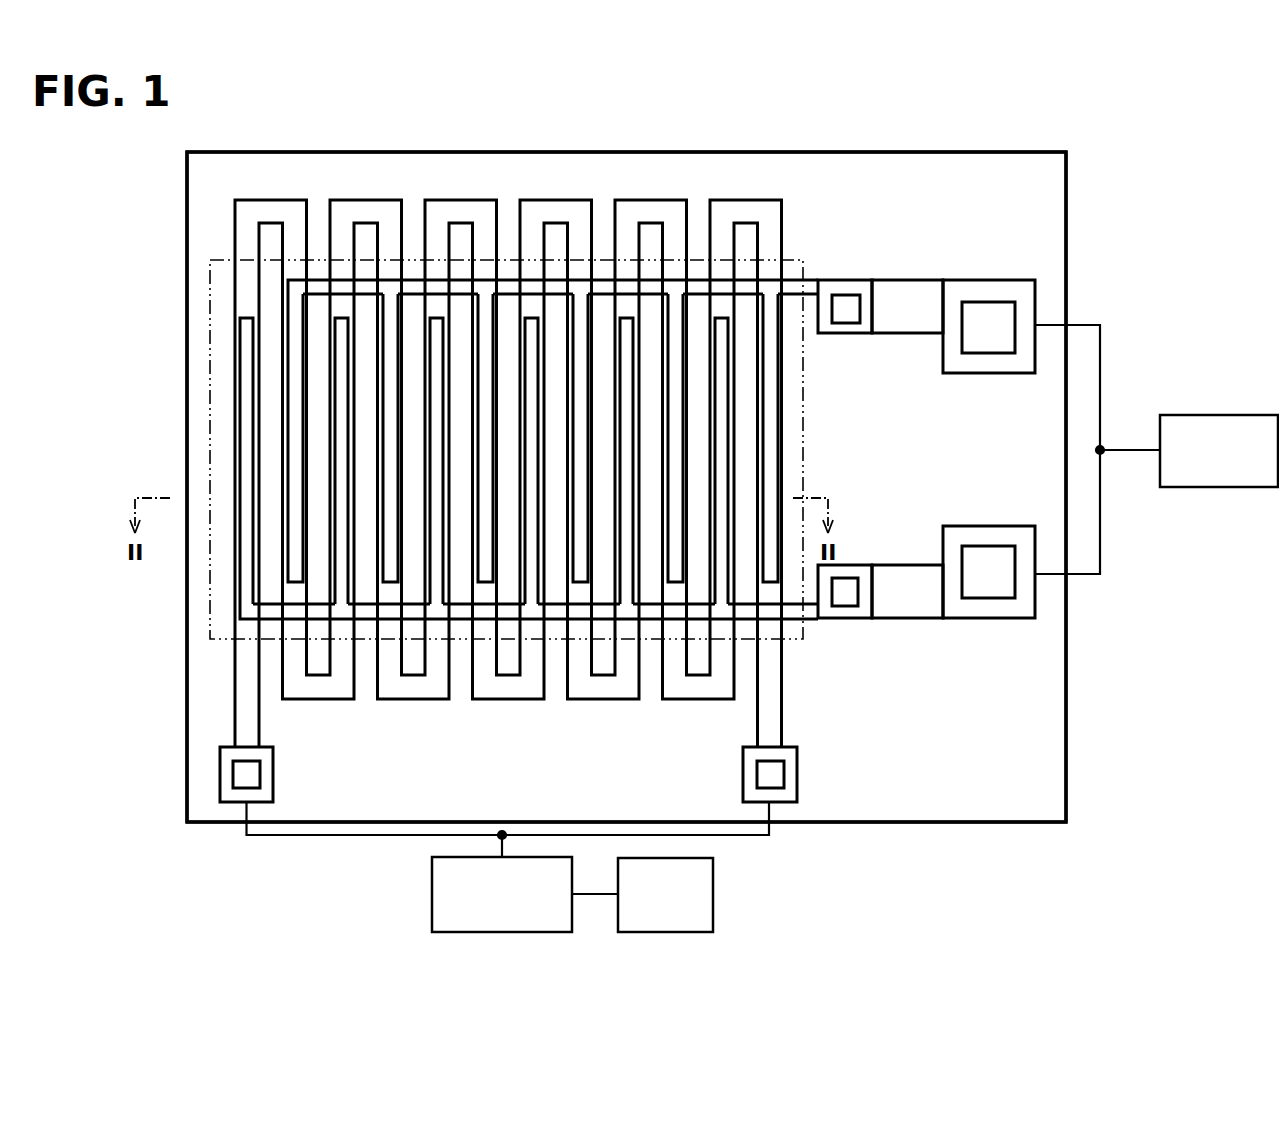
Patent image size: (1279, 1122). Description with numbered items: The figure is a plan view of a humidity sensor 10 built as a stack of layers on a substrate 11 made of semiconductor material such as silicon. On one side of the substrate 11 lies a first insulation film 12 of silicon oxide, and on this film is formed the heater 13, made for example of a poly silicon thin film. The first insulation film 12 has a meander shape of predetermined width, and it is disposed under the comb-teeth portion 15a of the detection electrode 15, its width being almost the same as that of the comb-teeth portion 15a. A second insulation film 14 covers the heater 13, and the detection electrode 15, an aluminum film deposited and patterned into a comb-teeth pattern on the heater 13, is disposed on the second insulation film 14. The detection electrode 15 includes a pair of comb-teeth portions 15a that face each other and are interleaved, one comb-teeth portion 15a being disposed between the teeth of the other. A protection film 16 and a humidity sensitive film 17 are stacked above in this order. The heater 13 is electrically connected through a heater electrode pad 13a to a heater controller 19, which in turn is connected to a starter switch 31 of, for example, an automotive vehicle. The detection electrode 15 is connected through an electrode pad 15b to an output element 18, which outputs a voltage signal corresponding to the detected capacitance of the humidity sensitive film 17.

The humidity sensor 10 is at (1097, 208).
The substrate 11 is at (1068, 720).
The first insulation film 12 is at (1045, 780).
The heater 13 is at (510, 697).
The heater electrode pad 13a is at (273, 770).
The second insulation film 14 is at (792, 466).
The detection electrode 15 is at (562, 439).
The comb-teeth portion 15a is at (720, 378).
The electrode pad 15b is at (991, 374).
The protection film 16 is at (792, 429).
The humidity sensitive film 17 is at (803, 254).
The output element 18 is at (1231, 488).
The heater controller 19 is at (432, 892).
The starter switch 31 is at (713, 893).